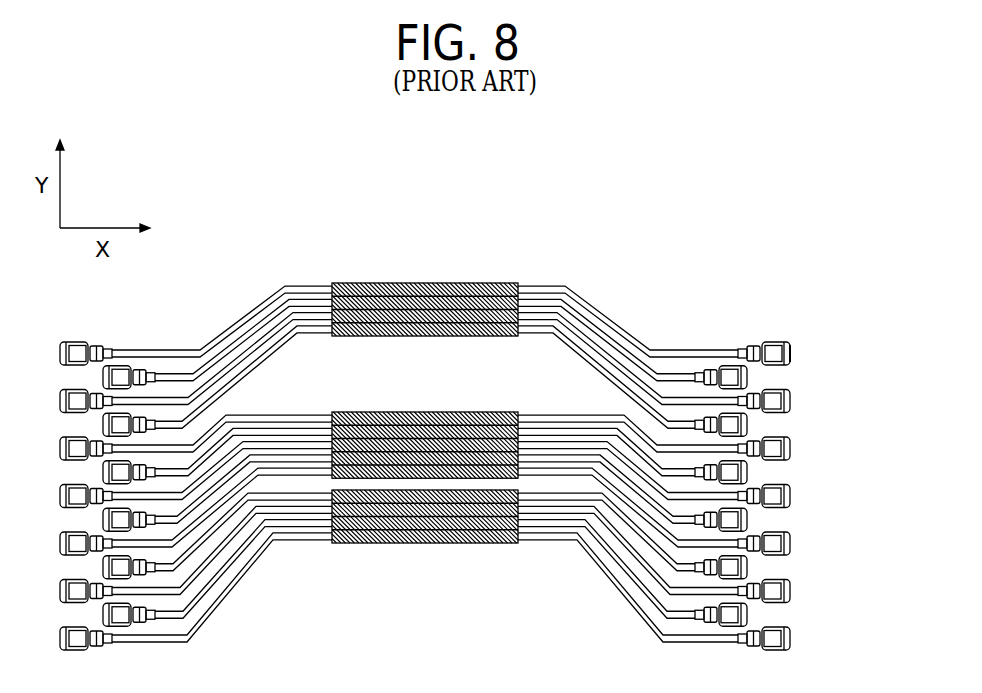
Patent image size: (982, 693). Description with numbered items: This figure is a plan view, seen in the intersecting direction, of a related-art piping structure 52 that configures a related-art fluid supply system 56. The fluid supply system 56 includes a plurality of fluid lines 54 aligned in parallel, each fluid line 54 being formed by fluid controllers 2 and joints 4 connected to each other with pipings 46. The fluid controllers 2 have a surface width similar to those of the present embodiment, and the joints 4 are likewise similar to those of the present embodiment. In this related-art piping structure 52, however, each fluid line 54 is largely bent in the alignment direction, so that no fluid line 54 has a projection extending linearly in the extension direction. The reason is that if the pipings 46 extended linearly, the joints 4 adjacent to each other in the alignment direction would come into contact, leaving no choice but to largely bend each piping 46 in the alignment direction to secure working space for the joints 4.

The fluid controller 2 is at (435, 282).
The piping 46 is at (528, 284).
The piping structure 52 is at (623, 318).
The joint 4 is at (817, 311).
The fluid supply system 56 is at (803, 338).
The fluid line 54 is at (797, 352).